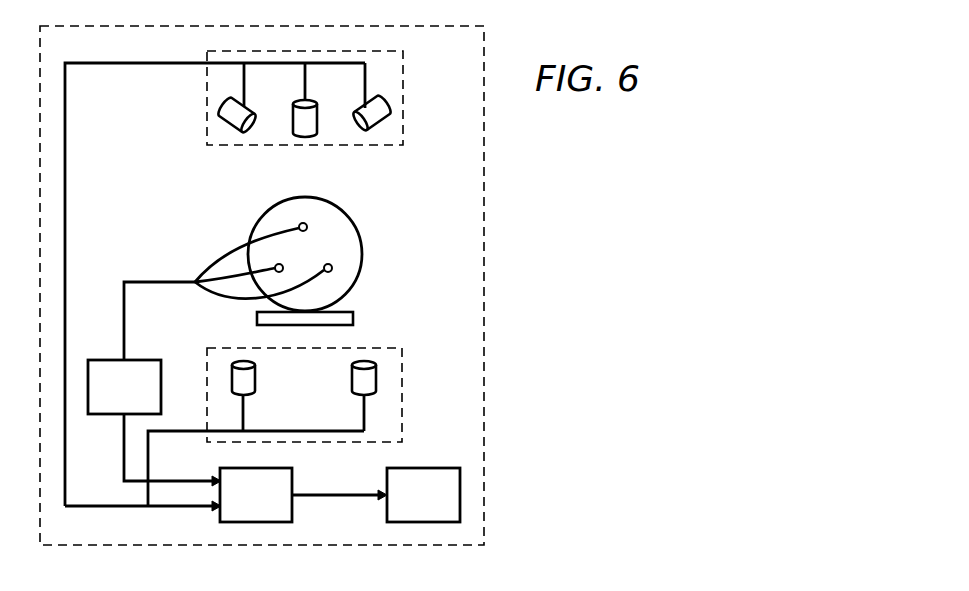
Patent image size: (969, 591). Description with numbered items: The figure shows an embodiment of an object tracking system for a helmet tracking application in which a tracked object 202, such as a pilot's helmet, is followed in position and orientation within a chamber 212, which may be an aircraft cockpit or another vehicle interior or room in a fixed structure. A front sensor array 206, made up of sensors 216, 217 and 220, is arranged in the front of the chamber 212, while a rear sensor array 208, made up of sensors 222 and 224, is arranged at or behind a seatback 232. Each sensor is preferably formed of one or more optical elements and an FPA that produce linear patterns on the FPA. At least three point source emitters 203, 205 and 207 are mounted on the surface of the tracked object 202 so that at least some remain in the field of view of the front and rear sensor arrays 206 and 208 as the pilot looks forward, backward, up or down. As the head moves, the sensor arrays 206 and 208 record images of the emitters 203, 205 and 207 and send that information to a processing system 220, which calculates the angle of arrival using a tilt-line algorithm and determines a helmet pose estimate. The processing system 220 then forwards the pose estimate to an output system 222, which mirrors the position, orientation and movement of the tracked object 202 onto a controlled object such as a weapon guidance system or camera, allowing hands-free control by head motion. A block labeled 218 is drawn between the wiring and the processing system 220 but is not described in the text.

The chamber 212 is at (484, 291).
The front sensor array 206 is at (207, 138).
The sensor 216 is at (222, 104).
The sensor 217 is at (392, 106).
The processing system 220 is at (318, 113).
The tracked object 202 is at (273, 204).
The emitter 203 is at (307, 226).
The emitter 205 is at (283, 267).
The emitter 207 is at (332, 268).
The seatback 232 is at (353, 318).
The rear sensor array 208 is at (211, 348).
The stimulator 218 is at (124, 387).
The output system 222 is at (257, 383).
The sensor 224 is at (350, 385).